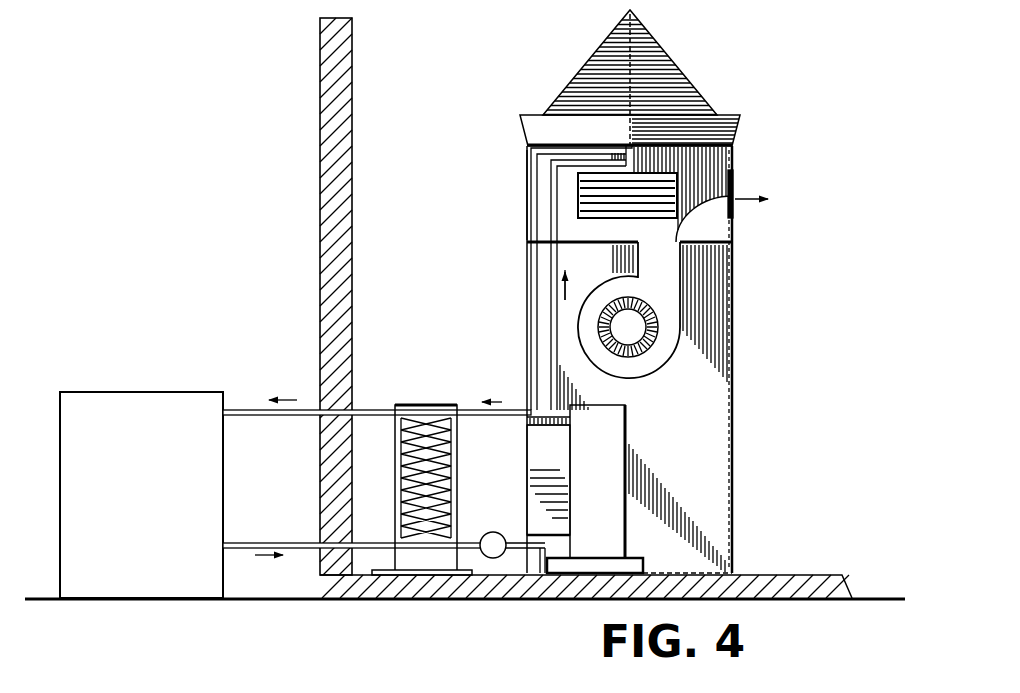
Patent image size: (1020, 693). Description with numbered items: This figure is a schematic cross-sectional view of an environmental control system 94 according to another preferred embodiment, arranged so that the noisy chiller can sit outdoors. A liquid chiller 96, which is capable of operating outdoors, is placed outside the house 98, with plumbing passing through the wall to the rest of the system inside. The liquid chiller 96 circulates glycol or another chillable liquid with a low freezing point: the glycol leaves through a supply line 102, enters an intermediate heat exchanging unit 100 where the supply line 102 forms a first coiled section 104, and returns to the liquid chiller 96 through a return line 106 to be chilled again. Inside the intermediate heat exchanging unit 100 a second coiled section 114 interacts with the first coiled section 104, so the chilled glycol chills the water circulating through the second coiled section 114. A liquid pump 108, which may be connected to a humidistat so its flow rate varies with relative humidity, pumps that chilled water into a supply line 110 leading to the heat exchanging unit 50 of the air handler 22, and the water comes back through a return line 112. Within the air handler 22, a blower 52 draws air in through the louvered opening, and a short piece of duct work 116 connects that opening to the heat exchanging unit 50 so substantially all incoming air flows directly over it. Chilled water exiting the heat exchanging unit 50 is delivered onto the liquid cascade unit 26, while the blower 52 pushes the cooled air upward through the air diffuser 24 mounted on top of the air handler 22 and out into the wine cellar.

The environmental control system 94 is at (802, 108).
The liquid cascade unit 26 is at (684, 61).
The air diffuser 24 is at (524, 213).
The air handler 22 is at (737, 455).
The blower 52 is at (658, 358).
The heat exchanging unit 50 is at (609, 456).
The duct work 116 is at (551, 463).
The house 98 is at (320, 222).
The liquid chiller 96 is at (150, 518).
The return line 106 is at (258, 417).
The supply line 102 is at (272, 543).
The intermediate heat exchanging unit 100 is at (432, 405).
The first coiled section 104 is at (458, 490).
The second coiled section 114 is at (448, 432).
The return line 112 is at (492, 401).
The liquid pump 108 is at (493, 559).
The supply line 110 is at (541, 574).